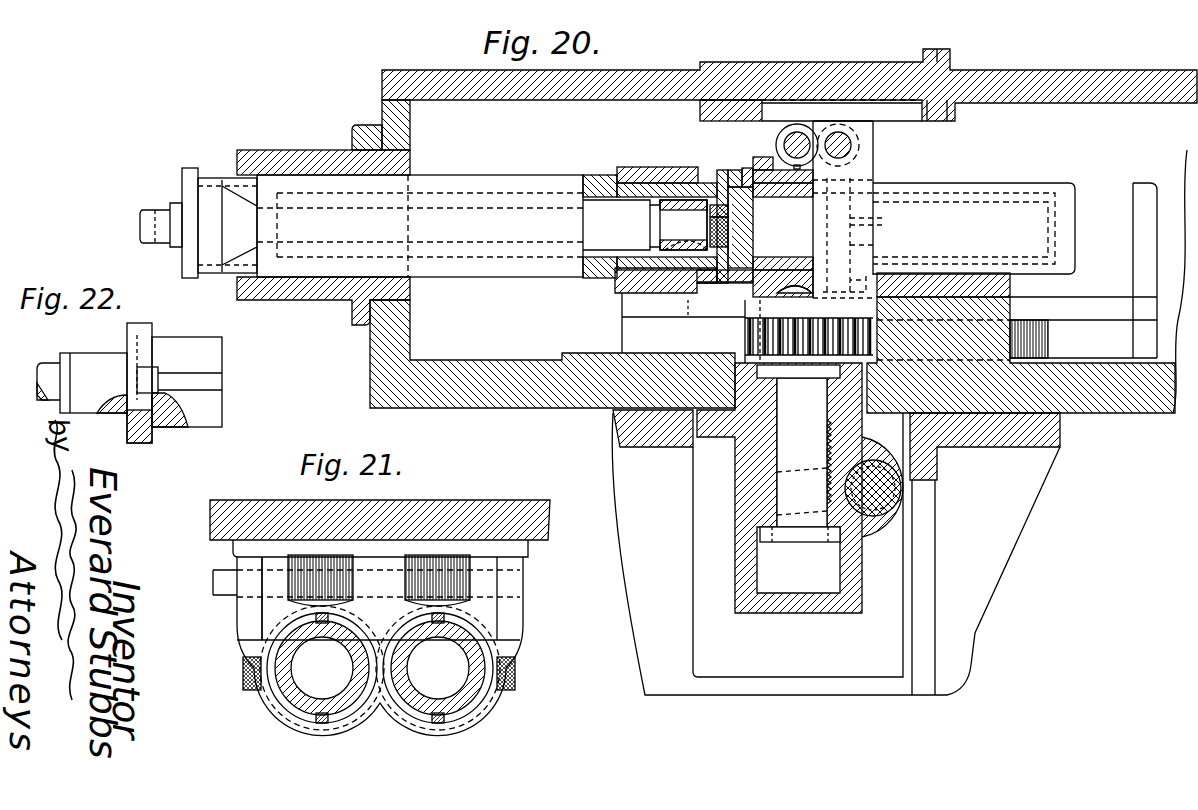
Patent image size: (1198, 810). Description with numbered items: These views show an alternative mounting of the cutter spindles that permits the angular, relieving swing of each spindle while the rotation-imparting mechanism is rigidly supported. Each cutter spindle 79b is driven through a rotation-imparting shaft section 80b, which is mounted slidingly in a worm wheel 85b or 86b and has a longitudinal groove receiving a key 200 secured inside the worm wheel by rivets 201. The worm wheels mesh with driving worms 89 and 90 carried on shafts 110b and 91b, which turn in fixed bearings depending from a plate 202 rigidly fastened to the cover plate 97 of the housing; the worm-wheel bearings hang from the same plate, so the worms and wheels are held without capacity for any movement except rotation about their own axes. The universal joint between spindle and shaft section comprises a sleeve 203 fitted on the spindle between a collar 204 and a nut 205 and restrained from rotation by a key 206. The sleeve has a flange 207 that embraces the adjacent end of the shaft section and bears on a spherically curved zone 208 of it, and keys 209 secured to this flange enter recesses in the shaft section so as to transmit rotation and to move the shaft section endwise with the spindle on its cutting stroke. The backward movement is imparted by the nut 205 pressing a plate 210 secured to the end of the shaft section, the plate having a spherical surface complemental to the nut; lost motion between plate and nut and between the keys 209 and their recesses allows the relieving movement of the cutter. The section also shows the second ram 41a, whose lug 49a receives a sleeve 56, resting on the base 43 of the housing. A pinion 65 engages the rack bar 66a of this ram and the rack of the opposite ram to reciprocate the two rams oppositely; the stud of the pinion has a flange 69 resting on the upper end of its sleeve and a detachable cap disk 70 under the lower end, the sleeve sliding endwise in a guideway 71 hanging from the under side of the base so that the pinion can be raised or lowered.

In FIG. 20, the cover plate 97 is at (832, 72).
In FIG. 21, the cover plate 97 is at (512, 500).
In FIG. 20, the plate 202 is at (902, 112).
In FIG. 21, the plate 202 is at (533, 549).
In FIG. 20, the shaft 91b is at (792, 136).
In FIG. 20, the shaft 110b is at (852, 145).
In FIG. 20, the key 200 is at (789, 262).
In FIG. 21, the key 200 is at (322, 636).
In FIG. 20, the rotation-imparting shaft section 80b is at (969, 203).
In FIG. 21, the rotation-imparting shaft section 80b is at (282, 684).
In FIG. 22, the rotation-imparting shaft section 80b is at (213, 408).
In FIG. 20, the worm wheel 85b is at (884, 220).
In FIG. 20, the sleeve 56 is at (466, 277).
In FIG. 20, the second ram 41a is at (628, 326).
In FIG. 20, the lug 49a is at (616, 284).
In FIG. 20, the key 206 is at (688, 300).
In FIG. 20, the cutter spindle 79b is at (598, 200).
In FIG. 22, the cutter spindle 79b is at (43, 380).
In FIG. 20, the sleeve 203 is at (672, 168).
In FIG. 22, the sleeve 203 is at (88, 354).
In FIG. 20, the collar 204 is at (650, 222).
In FIG. 22, the collar 204 is at (64, 383).
In FIG. 20, the nut 205 is at (742, 213).
In FIG. 20, the plate 210 is at (744, 240).
In FIG. 22, the plate 210 is at (152, 428).
In FIG. 20, the flange 207 is at (720, 172).
In FIG. 22, the flange 207 is at (133, 444).
In FIG. 20, the keys 209 is at (737, 168).
In FIG. 22, the keys 209 is at (153, 380).
In FIG. 20, the rivets 201 is at (758, 156).
In FIG. 21, the rivets 201 is at (360, 728).
In FIG. 20, the worm wheel 86b is at (798, 288).
In FIG. 20, the base 43 is at (1108, 415).
In FIG. 20, the rack bar 66a is at (1048, 340).
In FIG. 20, the guideway 71 is at (740, 580).
In FIG. 20, the pinion 65 is at (839, 452).
In FIG. 20, the flange 69 is at (780, 370).
In FIG. 20, the cap disk 70 is at (765, 535).
In FIG. 21, the worm 89 is at (453, 580).
In FIG. 21, the worm 90 is at (300, 577).
In FIG. 22, the spherically curved zone 208 is at (130, 422).